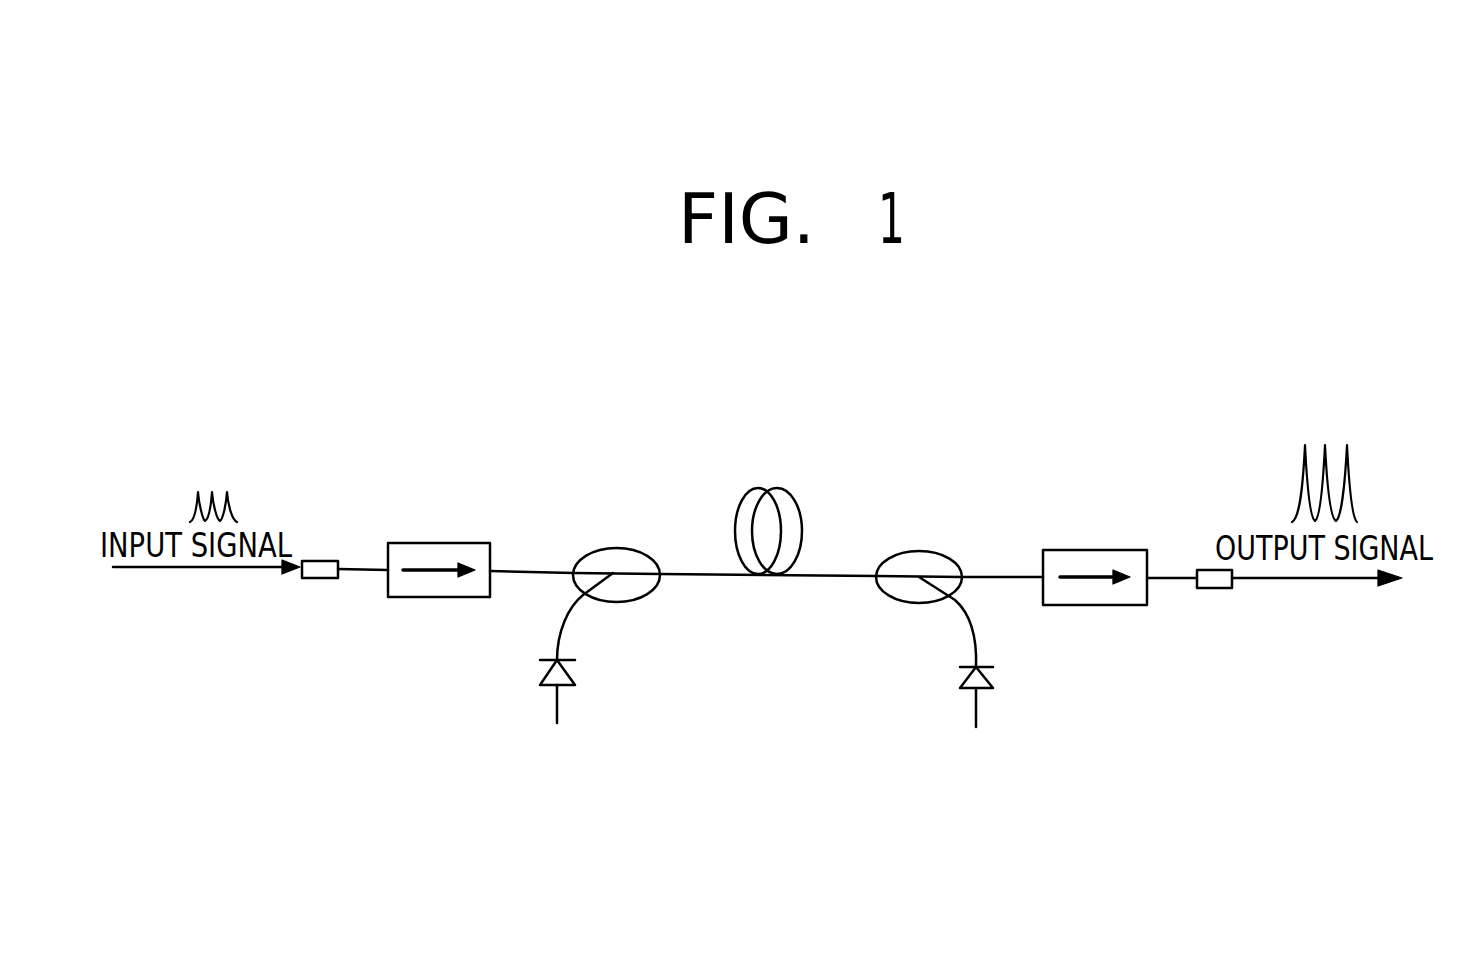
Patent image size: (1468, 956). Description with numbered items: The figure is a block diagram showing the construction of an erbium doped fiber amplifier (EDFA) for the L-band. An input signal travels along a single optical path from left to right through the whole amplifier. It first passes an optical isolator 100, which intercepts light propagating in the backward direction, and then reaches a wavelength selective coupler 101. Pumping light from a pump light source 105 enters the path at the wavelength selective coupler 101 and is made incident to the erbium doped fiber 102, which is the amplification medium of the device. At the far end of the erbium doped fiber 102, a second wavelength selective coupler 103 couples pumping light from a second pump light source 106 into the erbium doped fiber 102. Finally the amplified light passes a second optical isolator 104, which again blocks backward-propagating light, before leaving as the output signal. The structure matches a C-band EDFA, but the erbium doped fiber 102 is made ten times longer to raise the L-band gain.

The optical isolator 100 is at (430, 552).
The wavelength selective coupler 101 is at (610, 557).
The erbium doped fiber 102 is at (773, 490).
The wavelength selective coupler 103 is at (925, 558).
The optical isolator 104 is at (1092, 558).
The pump light source 105 is at (546, 648).
The pump light source 106 is at (983, 652).